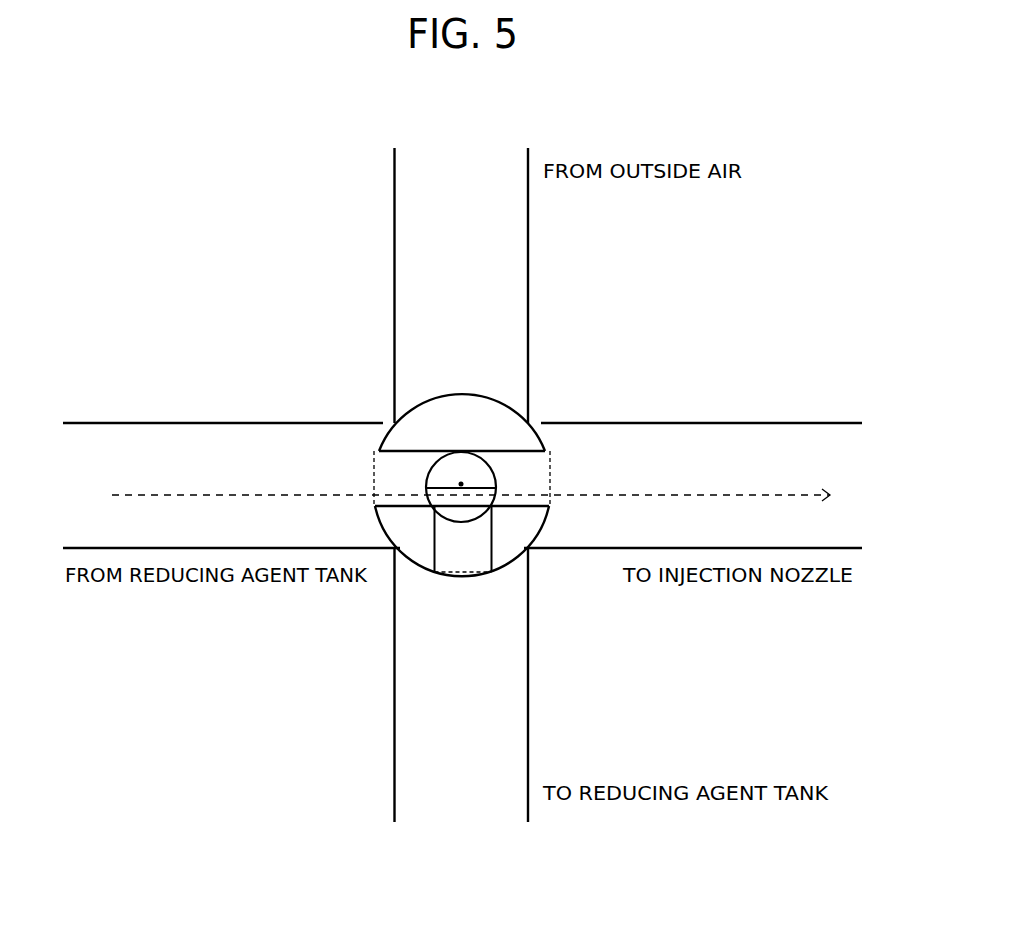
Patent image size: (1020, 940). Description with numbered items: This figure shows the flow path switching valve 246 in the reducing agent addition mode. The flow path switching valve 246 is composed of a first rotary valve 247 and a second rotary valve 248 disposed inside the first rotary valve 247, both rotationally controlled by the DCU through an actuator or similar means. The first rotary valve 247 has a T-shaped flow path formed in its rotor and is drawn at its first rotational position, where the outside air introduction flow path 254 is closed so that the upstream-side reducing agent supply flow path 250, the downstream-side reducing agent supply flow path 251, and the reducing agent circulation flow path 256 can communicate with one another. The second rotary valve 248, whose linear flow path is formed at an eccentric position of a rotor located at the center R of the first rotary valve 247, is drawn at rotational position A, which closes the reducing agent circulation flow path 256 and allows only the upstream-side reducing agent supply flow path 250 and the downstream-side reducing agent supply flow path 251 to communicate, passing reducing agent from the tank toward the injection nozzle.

The outside air introduction flow path 254 is at (393, 250).
The reducing agent circulation flow path 256 is at (395, 697).
The upstream-side reducing agent supply flow path 250 is at (260, 422).
The downstream-side reducing agent supply flow path 251 is at (753, 420).
The flow path switching valve 246 is at (490, 397).
The first rotary valve 247 is at (427, 420).
The second rotary valve 248 is at (457, 463).
The rotation axis R is at (462, 483).